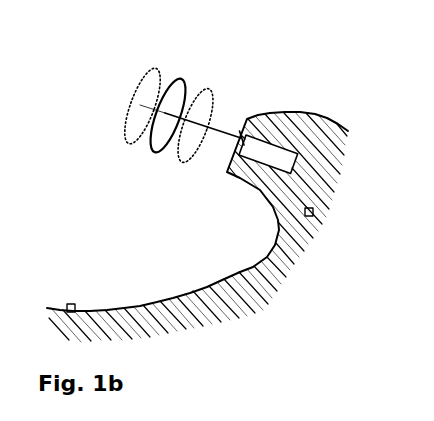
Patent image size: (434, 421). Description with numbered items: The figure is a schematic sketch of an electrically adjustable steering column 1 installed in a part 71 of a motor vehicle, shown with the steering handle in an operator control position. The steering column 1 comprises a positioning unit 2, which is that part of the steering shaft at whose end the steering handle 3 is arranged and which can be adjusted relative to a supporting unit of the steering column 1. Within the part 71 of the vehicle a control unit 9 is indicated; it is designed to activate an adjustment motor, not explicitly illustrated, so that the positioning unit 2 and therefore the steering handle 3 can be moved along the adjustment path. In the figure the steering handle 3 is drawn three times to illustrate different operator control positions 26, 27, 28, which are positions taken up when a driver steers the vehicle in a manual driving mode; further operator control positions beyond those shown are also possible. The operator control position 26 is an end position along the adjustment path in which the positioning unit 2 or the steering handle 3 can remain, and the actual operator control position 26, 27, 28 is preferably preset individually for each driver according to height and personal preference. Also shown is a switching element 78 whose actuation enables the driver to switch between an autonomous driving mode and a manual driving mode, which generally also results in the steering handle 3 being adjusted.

The steering column 1 is at (277, 143).
The positioning unit 2 is at (223, 133).
The steering handle 3 is at (162, 133).
The operator control position 26 is at (125, 147).
The operator control position 27 is at (155, 157).
The operator control position 28 is at (181, 168).
The part of a motor vehicle 71 is at (323, 135).
The control unit 9 is at (313, 215).
The switching element 78 is at (70, 304).